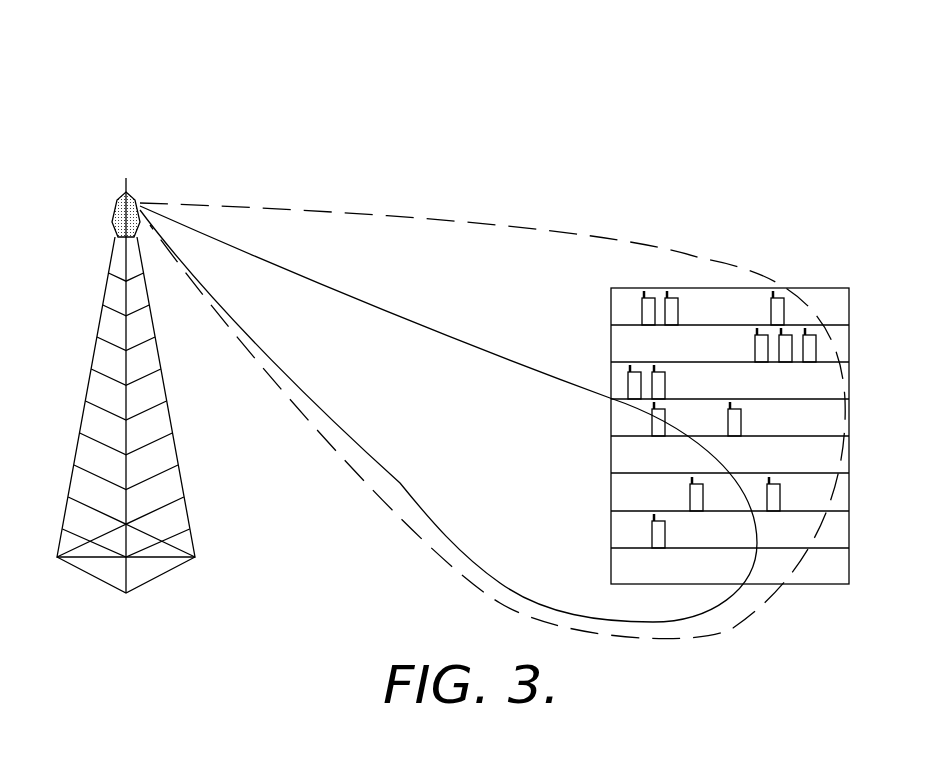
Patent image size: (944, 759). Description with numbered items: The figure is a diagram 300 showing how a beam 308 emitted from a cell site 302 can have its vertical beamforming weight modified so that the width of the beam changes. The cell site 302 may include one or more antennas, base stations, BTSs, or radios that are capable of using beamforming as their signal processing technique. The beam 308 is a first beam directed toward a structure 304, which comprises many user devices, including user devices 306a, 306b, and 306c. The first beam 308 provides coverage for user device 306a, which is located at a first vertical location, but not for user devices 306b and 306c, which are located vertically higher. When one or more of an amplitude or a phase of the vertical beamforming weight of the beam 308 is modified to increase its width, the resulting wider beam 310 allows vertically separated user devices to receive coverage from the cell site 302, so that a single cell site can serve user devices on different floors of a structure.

The diagram 300 is at (297, 66).
The cell site 302 is at (177, 453).
The structure 304 is at (808, 288).
The user device 306a is at (667, 533).
The user device 306b is at (617, 379).
The user device 306c is at (770, 313).
The beam 308 is at (432, 332).
The wide beam 310 is at (477, 222).